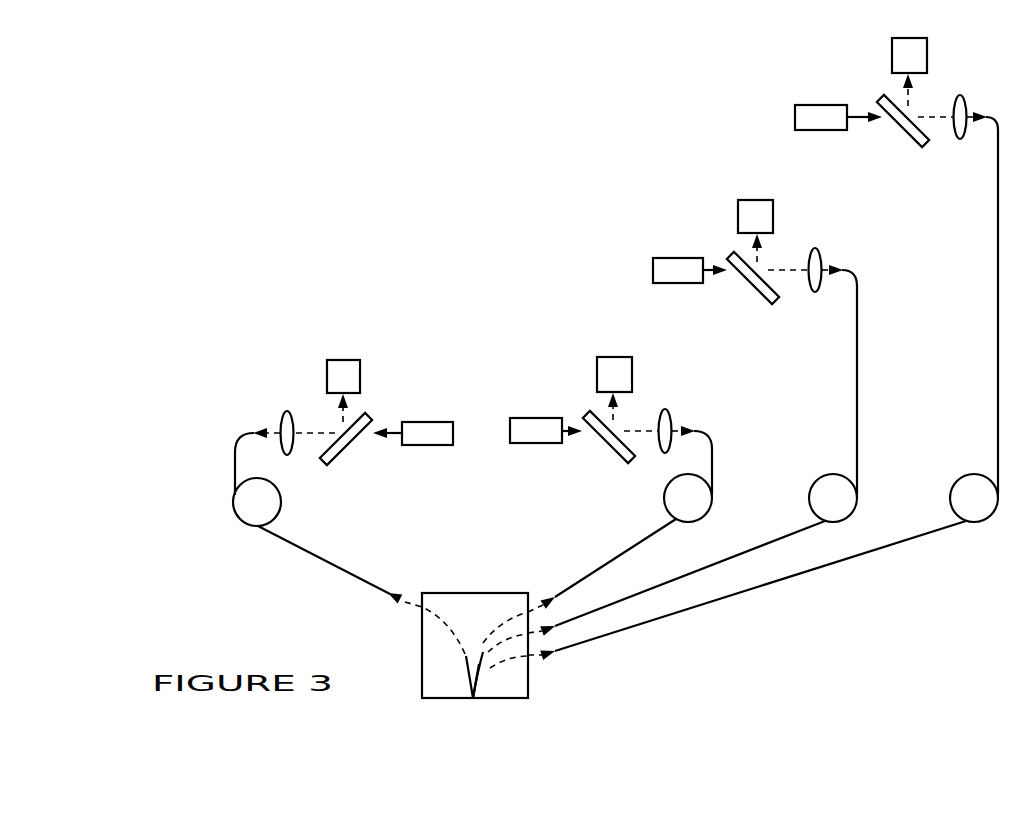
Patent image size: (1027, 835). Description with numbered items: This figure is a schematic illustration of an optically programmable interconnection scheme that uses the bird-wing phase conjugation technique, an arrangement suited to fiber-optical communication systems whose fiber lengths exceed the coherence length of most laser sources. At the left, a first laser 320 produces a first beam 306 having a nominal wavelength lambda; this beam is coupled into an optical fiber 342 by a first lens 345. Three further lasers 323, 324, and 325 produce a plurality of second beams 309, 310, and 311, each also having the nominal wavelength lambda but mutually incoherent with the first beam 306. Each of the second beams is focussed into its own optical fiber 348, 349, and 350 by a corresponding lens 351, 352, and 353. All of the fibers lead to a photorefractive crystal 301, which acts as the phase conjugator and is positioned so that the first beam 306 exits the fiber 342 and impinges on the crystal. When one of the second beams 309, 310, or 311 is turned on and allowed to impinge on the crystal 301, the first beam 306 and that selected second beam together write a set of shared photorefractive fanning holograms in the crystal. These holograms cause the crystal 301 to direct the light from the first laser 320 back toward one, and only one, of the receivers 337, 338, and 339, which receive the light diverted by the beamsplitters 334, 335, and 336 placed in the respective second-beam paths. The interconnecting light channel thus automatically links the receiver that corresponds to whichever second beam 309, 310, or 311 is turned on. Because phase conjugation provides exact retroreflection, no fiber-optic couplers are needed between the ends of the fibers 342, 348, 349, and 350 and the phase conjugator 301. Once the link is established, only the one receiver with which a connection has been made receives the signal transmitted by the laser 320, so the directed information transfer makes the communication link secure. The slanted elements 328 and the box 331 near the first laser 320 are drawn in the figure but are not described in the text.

The photorefractive crystal 301 is at (460, 592).
The first beam 306 is at (389, 436).
The second beam 309 is at (578, 433).
The second beam 310 is at (728, 272).
The second beam 311 is at (882, 117).
The first laser 320 is at (417, 421).
The laser 323 is at (540, 418).
The laser 324 is at (675, 258).
The laser 325 is at (795, 117).
The beam splitter 328 is at (370, 413).
The detector 331 is at (347, 358).
The beamsplitter 334 is at (637, 458).
The beamsplitter 335 is at (780, 298).
The beamsplitter 336 is at (927, 140).
The receiver 337 is at (618, 357).
The receiver 338 is at (758, 200).
The receiver 339 is at (892, 55).
The optical fiber 342 is at (281, 490).
The first lens 345 is at (283, 415).
The optical fiber 348 is at (713, 497).
The optical fiber 349 is at (808, 488).
The optical fiber 350 is at (950, 483).
The lens 351 is at (672, 417).
The lens 352 is at (822, 265).
The lens 353 is at (967, 102).